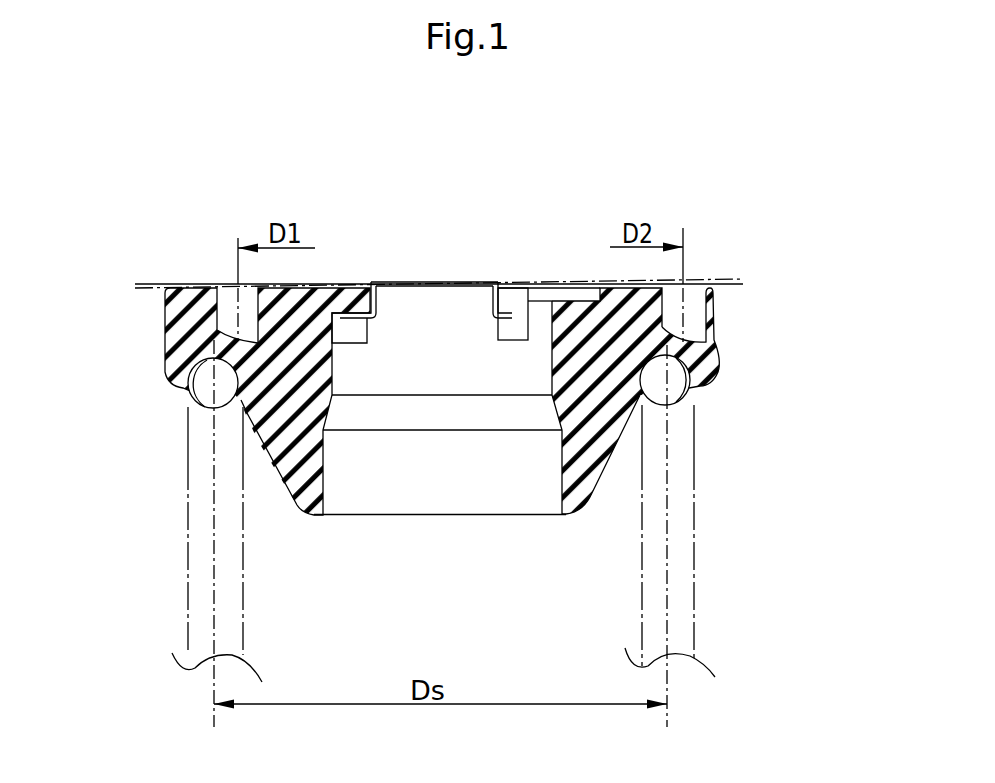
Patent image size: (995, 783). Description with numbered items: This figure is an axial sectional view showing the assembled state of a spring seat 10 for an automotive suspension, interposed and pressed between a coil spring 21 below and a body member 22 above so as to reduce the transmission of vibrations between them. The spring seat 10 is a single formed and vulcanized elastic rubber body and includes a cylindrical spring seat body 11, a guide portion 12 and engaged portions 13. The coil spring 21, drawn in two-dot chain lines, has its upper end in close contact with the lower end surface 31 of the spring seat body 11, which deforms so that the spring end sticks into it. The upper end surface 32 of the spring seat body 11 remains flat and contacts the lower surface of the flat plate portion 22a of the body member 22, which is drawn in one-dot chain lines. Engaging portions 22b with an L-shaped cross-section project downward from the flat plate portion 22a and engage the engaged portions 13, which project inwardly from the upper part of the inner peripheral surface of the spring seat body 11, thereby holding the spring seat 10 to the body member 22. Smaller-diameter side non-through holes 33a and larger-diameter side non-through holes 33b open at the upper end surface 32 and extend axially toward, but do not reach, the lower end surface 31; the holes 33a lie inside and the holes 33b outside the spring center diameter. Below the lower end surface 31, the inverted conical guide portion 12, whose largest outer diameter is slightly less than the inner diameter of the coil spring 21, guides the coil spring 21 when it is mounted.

The spring seat 10 is at (733, 308).
The spring seat body 11 is at (703, 348).
The guide portion 12 is at (603, 480).
The engaged portions 13 is at (357, 285).
The coil spring 21 is at (697, 585).
The body member 22 is at (461, 209).
The flat plate portion 22a is at (417, 285).
The engaging portions 22b is at (485, 283).
The lower end surface 31 is at (200, 398).
The upper end surface 32 is at (178, 284).
The smaller-diameter side non-through holes 33a is at (228, 290).
The larger-diameter side non-through holes 33b is at (698, 288).